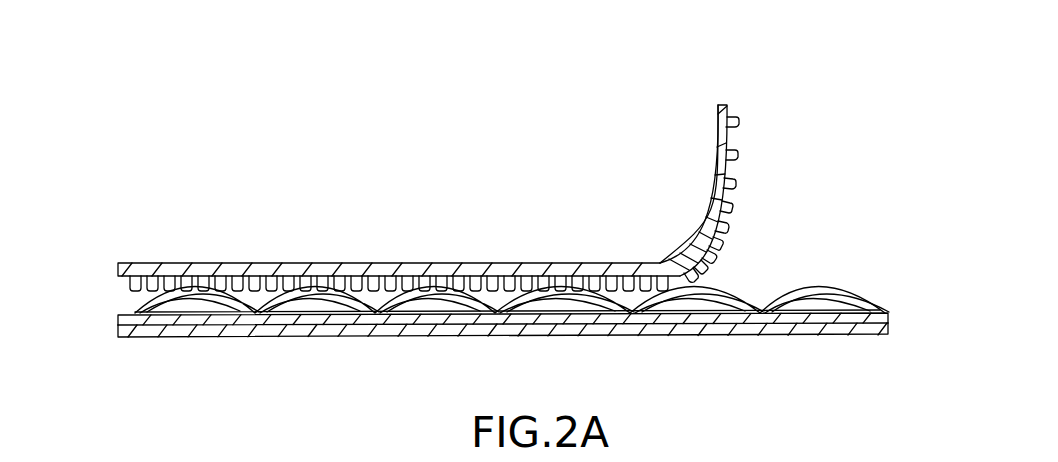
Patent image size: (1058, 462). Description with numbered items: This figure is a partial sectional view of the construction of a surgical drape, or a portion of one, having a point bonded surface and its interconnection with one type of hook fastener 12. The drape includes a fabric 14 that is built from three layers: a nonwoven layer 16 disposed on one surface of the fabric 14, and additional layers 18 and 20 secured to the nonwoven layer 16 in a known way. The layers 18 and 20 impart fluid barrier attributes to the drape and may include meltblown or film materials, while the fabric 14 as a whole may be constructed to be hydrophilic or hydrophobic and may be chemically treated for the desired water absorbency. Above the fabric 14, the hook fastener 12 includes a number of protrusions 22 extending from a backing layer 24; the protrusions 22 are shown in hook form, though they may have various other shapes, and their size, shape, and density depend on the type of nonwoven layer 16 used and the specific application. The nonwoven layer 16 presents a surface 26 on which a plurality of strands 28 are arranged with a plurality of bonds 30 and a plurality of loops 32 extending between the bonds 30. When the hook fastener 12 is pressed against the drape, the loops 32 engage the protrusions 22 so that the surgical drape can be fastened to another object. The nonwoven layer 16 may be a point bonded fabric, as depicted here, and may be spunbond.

The hook fastener 12 is at (504, 251).
The fabric 14 is at (115, 285).
The nonwoven layer 16 is at (846, 284).
The additional layer 18 is at (889, 320).
The additional layer 20 is at (893, 336).
The protrusions 22 is at (745, 118).
The backing layer 24 is at (718, 104).
The surface 26 is at (877, 309).
The strands 28 is at (790, 277).
The bonds 30 is at (733, 329).
The loops 32 is at (545, 304).